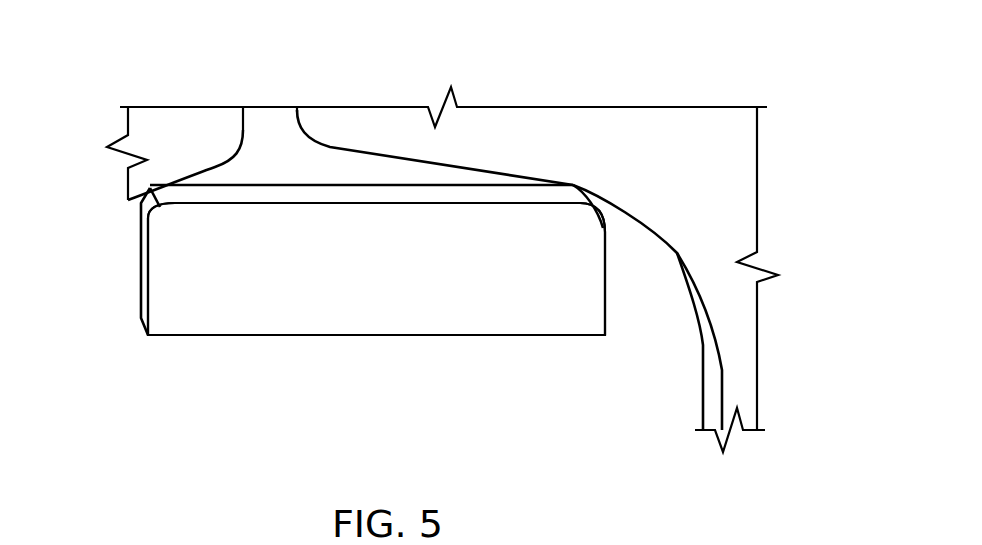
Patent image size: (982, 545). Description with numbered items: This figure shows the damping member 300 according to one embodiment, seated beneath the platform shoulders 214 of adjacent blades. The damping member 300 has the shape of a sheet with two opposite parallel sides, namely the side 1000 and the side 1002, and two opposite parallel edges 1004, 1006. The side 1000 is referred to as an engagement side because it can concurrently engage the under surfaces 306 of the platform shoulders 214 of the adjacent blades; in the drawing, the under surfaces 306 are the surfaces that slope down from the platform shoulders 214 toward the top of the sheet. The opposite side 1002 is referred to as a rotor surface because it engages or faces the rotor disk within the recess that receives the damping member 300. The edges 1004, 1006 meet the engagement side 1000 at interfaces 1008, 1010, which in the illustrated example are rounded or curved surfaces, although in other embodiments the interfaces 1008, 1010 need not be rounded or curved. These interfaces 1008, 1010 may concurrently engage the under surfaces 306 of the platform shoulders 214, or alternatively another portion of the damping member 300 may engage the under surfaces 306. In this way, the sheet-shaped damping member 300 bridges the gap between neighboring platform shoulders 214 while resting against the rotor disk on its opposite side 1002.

The platform shoulder 214 is at (217, 125).
The under surface 306 is at (383, 163).
The damping member 300 is at (497, 312).
The engagement side 1000 is at (383, 210).
The rotor surface 1002 is at (383, 320).
The edge 1004 is at (155, 277).
The edge 1006 is at (597, 277).
The interface 1008 is at (165, 218).
The interface 1010 is at (590, 218).